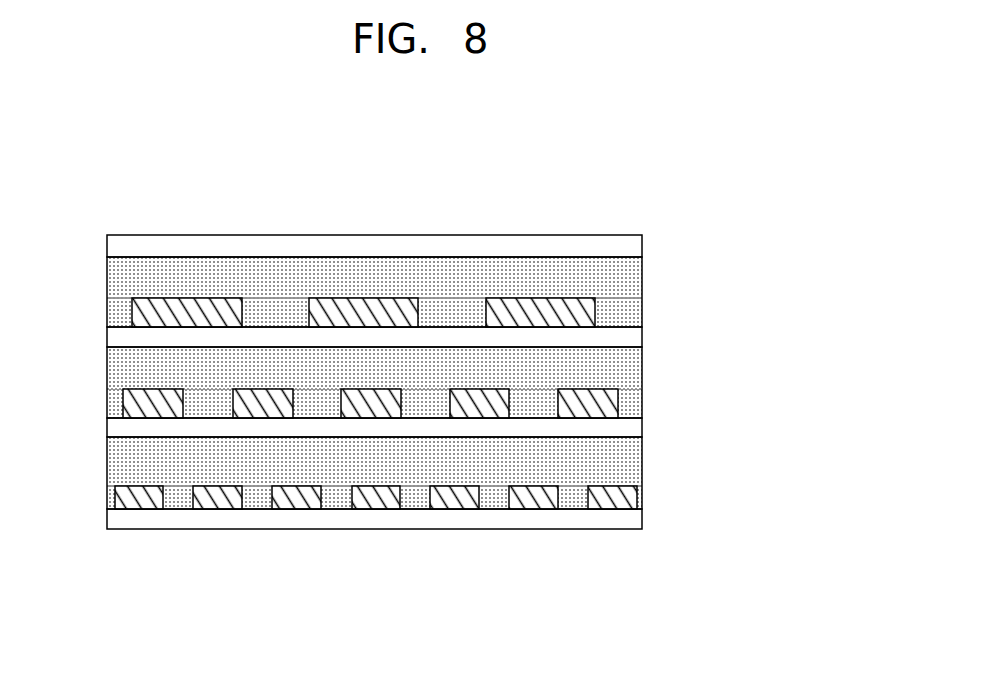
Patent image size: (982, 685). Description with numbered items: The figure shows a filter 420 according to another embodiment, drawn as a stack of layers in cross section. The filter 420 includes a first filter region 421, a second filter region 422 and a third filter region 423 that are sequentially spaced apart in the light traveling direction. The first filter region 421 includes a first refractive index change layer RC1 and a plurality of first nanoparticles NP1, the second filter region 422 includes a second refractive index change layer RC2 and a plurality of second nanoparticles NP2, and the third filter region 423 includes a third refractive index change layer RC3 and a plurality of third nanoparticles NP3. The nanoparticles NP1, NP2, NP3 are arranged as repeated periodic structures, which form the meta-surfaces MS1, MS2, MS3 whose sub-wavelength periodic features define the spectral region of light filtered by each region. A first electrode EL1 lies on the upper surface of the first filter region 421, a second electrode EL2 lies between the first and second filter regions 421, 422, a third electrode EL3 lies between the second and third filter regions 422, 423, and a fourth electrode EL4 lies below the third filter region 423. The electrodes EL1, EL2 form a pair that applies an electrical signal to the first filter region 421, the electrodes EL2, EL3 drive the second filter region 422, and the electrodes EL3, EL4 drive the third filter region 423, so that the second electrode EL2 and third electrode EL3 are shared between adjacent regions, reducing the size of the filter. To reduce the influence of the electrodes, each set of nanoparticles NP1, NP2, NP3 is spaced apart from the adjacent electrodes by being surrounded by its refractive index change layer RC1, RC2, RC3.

The filter 420 is at (677, 197).
The first filter region 421 is at (97, 235).
The second filter region 422 is at (80, 327).
The third filter region 423 is at (67, 418).
The first electrode EL1 is at (632, 247).
The second electrode EL2 is at (632, 335).
The third electrode EL3 is at (633, 427).
The fourth electrode EL4 is at (633, 517).
The meta-surface MS1 is at (647, 299).
The meta-surface MS2 is at (647, 389).
The meta-surface MS3 is at (647, 486).
The first refractive index change layer RC1 is at (349, 268).
The second refractive index change layer RC2 is at (458, 358).
The third refractive index change layer RC3 is at (455, 462).
The first nanoparticles NP1 is at (186, 298).
The second nanoparticles NP2 is at (155, 413).
The third nanoparticles NP3 is at (296, 509).